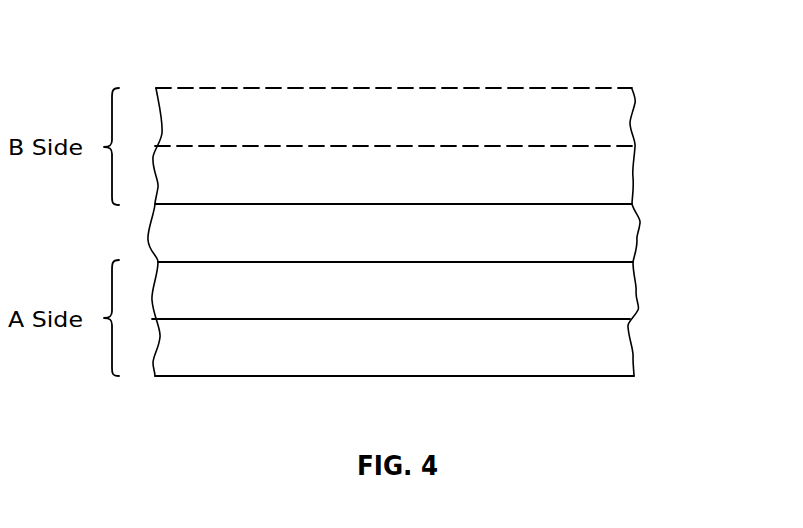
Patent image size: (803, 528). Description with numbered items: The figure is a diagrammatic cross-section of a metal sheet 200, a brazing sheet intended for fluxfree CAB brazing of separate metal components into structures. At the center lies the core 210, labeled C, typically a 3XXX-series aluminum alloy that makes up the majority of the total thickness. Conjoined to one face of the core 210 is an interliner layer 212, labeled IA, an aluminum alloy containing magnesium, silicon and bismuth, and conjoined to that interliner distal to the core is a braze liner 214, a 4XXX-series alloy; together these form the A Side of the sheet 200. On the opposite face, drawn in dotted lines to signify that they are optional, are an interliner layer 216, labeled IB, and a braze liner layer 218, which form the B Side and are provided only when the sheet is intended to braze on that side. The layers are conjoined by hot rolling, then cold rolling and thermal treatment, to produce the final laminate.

The metal sheet 200 is at (140, 60).
The braze liner layer 218 is at (630, 123).
The interliner layer 216 is at (633, 178).
The core 210 is at (637, 240).
The interliner layer 212 is at (636, 292).
The braze liner 214 is at (633, 358).